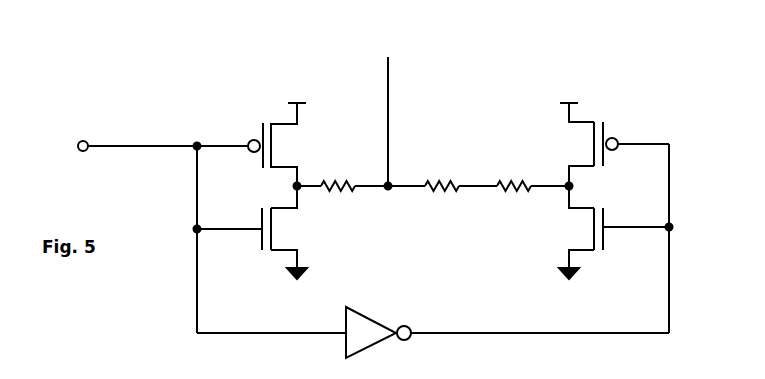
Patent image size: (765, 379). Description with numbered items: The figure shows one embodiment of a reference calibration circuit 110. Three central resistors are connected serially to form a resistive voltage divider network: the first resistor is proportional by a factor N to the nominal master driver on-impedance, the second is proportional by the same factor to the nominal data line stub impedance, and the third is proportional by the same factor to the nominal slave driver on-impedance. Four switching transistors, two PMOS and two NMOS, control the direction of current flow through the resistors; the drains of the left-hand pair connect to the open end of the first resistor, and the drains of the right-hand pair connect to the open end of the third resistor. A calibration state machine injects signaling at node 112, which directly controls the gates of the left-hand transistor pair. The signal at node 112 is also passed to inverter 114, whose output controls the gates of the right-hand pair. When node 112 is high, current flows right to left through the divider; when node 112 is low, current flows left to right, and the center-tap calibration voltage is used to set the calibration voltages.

The reference calibration circuit 110 is at (181, 95).
The node 112 is at (148, 156).
The inverter 114 is at (379, 344).